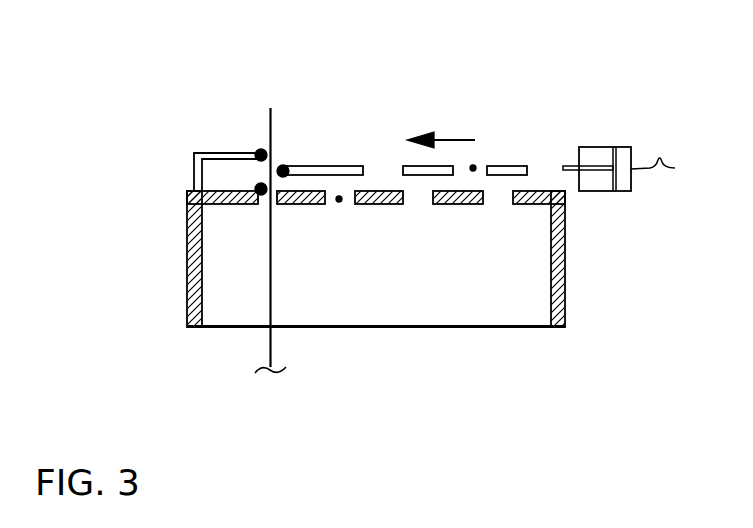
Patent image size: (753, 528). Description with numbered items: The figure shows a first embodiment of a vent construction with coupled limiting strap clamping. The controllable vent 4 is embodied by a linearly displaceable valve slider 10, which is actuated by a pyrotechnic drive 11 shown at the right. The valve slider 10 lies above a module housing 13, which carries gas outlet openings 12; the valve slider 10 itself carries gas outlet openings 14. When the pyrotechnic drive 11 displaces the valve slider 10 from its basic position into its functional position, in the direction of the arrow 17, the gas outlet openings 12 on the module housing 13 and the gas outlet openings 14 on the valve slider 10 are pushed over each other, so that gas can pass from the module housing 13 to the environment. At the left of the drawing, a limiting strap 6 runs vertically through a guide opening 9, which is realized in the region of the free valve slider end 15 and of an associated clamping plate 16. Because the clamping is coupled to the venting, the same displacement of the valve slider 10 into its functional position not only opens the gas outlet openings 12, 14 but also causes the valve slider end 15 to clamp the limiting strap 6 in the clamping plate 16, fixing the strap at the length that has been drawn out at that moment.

The controllable vent 4 is at (517, 108).
The limiting strap 6 is at (270, 290).
The guide opening 9 is at (266, 141).
The valve slider 10 is at (332, 168).
The pyrotechnic drive 11 is at (624, 154).
The gas outlet openings 12 is at (339, 199).
The module housing 13 is at (558, 278).
The gas outlet openings 14 is at (473, 168).
The free valve slider end 15 is at (285, 166).
The clamping plate 16 is at (208, 153).
The arrow 17 is at (452, 140).